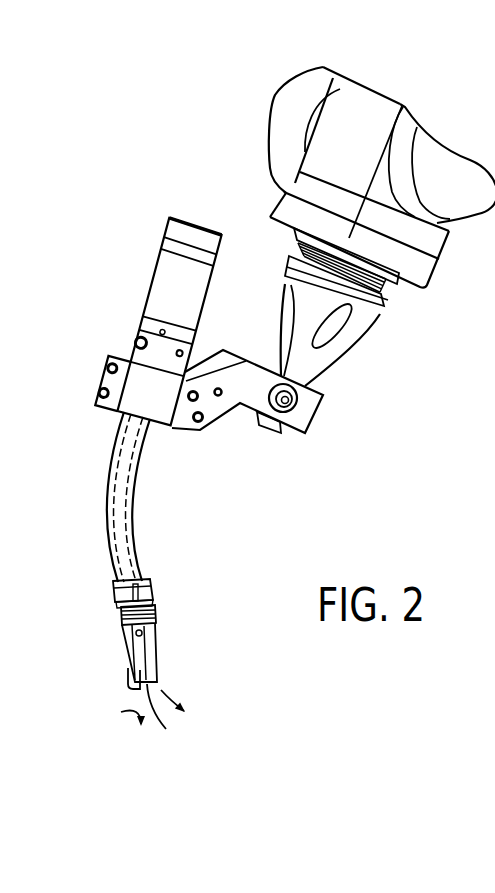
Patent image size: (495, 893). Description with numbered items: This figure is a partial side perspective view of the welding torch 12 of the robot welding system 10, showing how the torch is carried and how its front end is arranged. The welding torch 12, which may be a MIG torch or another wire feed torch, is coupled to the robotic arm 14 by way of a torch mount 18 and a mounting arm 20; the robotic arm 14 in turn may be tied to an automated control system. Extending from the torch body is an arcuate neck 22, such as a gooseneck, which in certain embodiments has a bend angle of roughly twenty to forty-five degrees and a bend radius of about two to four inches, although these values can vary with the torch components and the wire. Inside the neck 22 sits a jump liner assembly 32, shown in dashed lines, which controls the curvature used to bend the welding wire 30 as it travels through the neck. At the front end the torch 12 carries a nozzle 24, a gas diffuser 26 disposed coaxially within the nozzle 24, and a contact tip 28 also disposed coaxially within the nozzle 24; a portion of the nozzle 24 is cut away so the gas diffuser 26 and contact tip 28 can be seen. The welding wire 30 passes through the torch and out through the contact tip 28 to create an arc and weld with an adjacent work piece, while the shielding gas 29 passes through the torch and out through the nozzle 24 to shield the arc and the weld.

The robot welding system 10 is at (152, 192).
The welding torch 12 is at (128, 344).
The robotic arm 14 is at (368, 92).
The torch mount 18 is at (345, 338).
The mounting arm 20 is at (318, 412).
The arcuate neck 22 is at (135, 502).
The nozzle 24 is at (157, 623).
The gas diffuser 26 is at (127, 638).
The contact tip 28 is at (138, 676).
The shielding gas 29 is at (122, 712).
The welding wire 30 is at (166, 729).
The jump liner assembly 32 is at (124, 447).